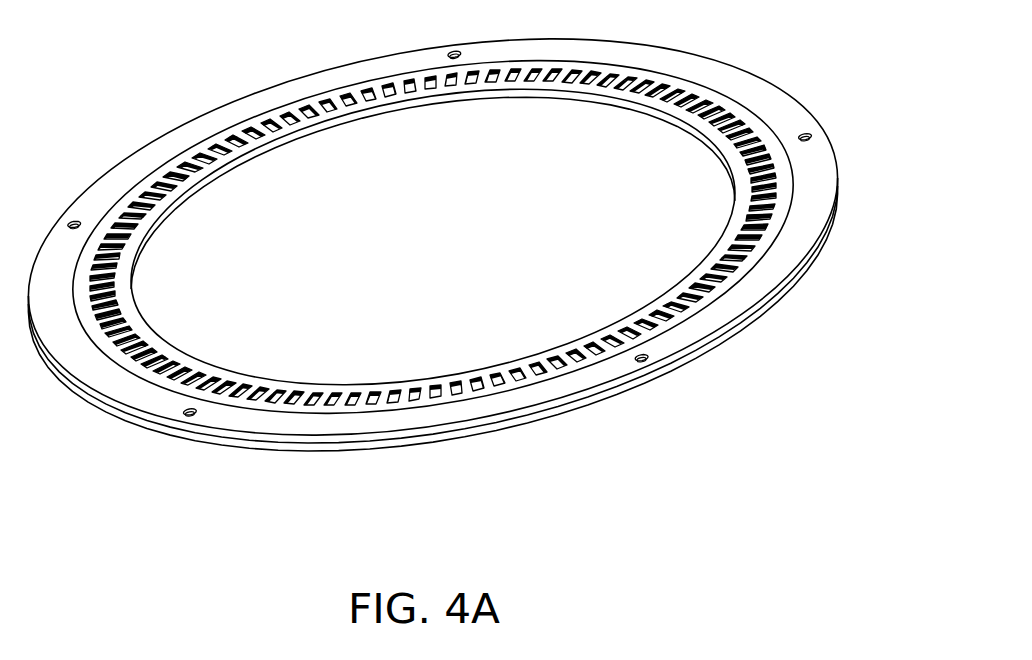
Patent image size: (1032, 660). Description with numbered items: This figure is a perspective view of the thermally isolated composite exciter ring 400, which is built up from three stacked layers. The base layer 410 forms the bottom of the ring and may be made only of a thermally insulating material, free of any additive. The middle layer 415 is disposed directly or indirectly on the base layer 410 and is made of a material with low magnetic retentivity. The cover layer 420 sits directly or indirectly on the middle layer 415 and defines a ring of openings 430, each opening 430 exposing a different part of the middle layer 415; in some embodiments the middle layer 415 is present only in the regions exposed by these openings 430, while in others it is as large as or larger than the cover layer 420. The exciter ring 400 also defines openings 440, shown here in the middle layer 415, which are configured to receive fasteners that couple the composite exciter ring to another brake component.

The composite exciter ring 400 is at (134, 103).
The base layer 410 is at (724, 343).
The middle layer 415 is at (806, 213).
The cover layer 420 is at (546, 356).
The openings 430 is at (352, 402).
The openings 440 is at (806, 134).